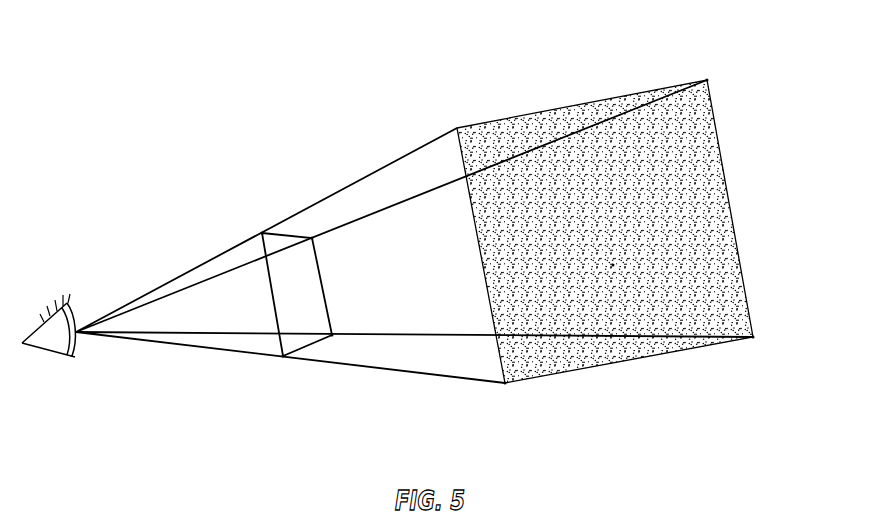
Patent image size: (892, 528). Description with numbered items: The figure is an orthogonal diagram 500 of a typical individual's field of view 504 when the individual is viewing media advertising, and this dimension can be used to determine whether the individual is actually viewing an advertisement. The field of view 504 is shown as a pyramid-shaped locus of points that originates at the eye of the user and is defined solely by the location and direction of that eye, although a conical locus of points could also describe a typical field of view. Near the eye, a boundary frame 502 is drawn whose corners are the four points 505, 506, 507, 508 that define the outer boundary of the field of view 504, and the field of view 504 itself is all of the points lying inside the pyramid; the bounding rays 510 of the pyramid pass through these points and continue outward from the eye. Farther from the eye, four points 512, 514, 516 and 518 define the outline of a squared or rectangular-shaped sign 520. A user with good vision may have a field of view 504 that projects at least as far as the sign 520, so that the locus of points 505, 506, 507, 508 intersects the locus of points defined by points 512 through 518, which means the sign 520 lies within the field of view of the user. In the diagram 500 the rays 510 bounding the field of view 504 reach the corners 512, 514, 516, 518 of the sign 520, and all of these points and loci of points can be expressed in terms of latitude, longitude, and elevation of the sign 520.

The orthogonal diagram 500 is at (149, 64).
The near display frame 502 is at (273, 248).
The field of view 504 is at (210, 318).
The point 505 is at (262, 232).
The point 506 is at (313, 237).
The point 507 is at (332, 336).
The point 508 is at (283, 357).
The upper light ray / viewing frustum 510 is at (192, 315).
The point 512 is at (707, 80).
The point 514 is at (450, 115).
The point 516 is at (505, 384).
The point 518 is at (753, 338).
The sign 520 is at (613, 265).